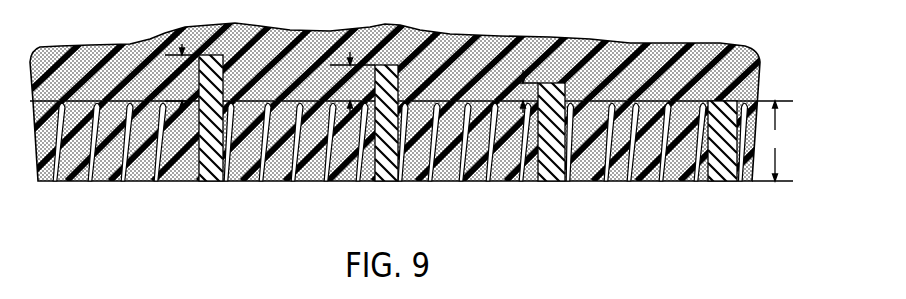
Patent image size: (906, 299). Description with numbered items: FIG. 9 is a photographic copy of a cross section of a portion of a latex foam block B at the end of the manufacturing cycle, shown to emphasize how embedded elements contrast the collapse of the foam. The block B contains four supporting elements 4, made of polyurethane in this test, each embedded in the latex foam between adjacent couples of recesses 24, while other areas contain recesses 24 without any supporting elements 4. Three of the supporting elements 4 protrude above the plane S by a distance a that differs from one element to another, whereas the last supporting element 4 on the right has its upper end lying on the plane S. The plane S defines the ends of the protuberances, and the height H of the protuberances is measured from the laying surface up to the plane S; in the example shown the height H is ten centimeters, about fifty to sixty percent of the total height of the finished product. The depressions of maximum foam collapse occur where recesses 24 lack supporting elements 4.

The supporting element 4 is at (468, 118).
The recess 24 is at (55, 181).
The latex foam block B is at (76, 83).
The plane S is at (603, 100).
The protrusion distance a is at (351, 78).
The height of the protuberances H is at (772, 141).